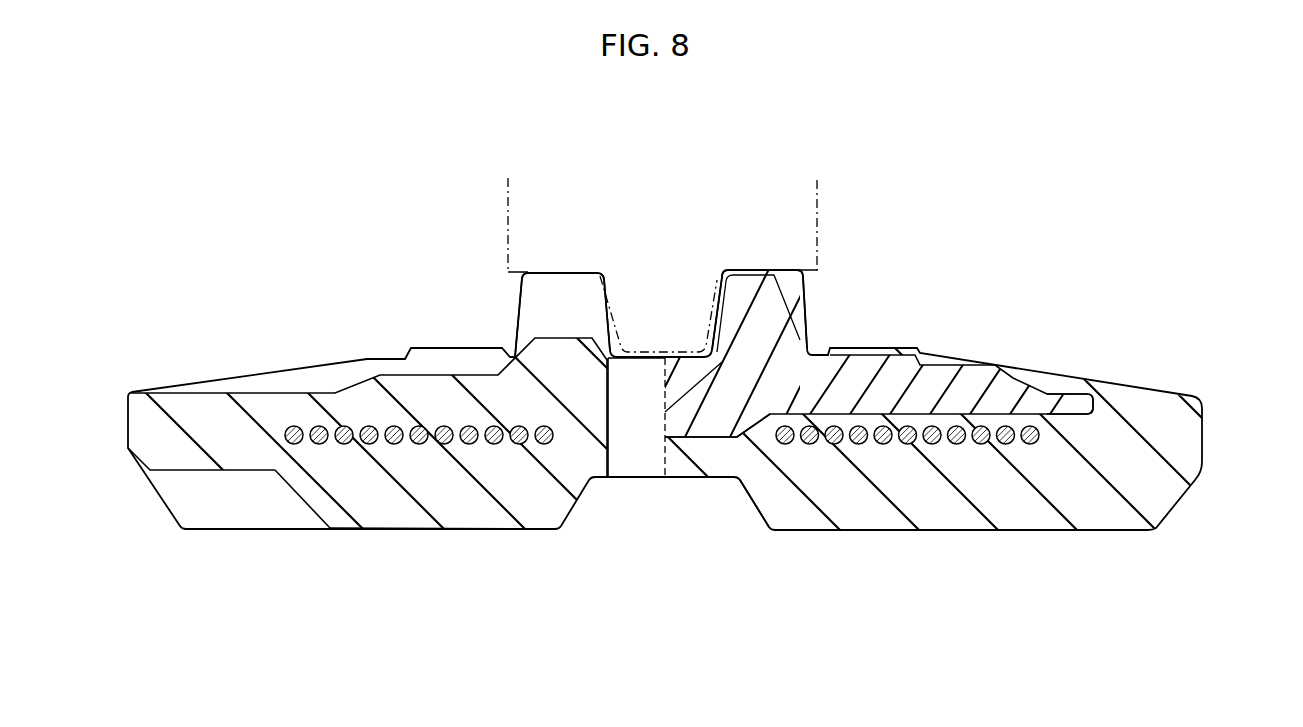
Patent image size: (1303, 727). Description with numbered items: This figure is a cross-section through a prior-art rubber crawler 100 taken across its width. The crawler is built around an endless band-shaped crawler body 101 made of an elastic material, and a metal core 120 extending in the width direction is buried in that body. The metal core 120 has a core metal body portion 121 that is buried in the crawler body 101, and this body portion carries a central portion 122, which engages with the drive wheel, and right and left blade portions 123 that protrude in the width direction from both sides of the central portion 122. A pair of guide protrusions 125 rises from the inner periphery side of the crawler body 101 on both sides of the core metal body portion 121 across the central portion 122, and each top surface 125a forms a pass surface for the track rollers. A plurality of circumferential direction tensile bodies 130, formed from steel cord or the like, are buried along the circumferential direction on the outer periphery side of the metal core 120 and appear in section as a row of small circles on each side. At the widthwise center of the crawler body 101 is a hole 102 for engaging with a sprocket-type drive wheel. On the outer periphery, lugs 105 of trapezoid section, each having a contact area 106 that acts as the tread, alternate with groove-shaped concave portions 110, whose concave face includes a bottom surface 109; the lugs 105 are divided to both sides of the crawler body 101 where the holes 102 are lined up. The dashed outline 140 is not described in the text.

The rubber crawler 100 is at (655, 410).
The crawler body 101 is at (1173, 391).
The hole 102 is at (638, 462).
The lug 105 is at (466, 515).
The contact area 106 is at (507, 531).
The bottom surface 109 is at (172, 472).
The concave portion 110 is at (190, 497).
The metal core 120 is at (966, 375).
The core metal body portion 121 is at (718, 437).
The central portion 122 is at (678, 420).
The blade portion 123 is at (1055, 407).
The guide protrusion 125 is at (550, 307).
The top surface 125a is at (552, 272).
The circumferential direction tensile body 130 is at (344, 444).
The mating member outline 140 is at (508, 192).